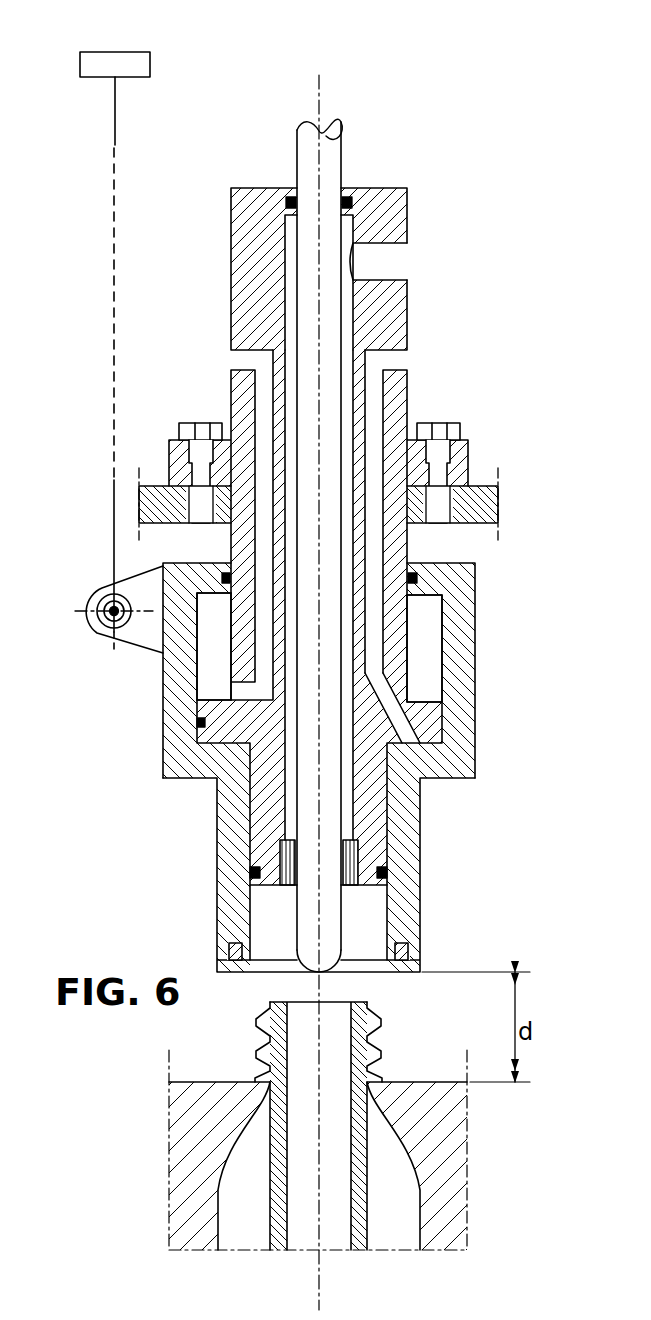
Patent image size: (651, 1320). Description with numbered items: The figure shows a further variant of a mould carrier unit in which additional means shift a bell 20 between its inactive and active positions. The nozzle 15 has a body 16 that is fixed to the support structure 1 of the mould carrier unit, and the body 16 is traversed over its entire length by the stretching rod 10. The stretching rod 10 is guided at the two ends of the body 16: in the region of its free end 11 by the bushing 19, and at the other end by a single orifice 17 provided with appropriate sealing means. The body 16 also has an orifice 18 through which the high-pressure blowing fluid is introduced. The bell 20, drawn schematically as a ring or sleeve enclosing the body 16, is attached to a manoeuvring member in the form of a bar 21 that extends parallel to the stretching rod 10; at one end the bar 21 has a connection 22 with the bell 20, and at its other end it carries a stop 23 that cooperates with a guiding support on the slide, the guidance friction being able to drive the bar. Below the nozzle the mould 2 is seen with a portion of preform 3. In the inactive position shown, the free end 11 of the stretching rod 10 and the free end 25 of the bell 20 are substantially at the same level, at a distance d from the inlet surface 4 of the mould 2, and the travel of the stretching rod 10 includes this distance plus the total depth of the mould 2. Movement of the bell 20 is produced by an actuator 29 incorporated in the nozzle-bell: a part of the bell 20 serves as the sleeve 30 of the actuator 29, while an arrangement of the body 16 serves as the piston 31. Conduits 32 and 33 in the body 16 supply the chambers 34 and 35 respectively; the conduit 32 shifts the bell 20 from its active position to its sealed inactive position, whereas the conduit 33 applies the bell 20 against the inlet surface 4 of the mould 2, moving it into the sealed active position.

The support structure 1 is at (488, 505).
The mould 2 is at (452, 1177).
The preform 3 is at (355, 1238).
The inlet surface 4 is at (200, 1081).
The stretching rod 10 is at (312, 157).
The free end 11 is at (308, 943).
The nozzle 15 is at (228, 186).
The body 16 is at (411, 207).
The orifice 17 is at (350, 197).
The orifice 18 is at (388, 258).
The bushing 19 is at (353, 885).
The bell 20 is at (215, 851).
The bar 21 is at (112, 513).
The connection 22 is at (92, 597).
The stop 23 is at (104, 62).
The free end 25 is at (241, 965).
The actuator 29 is at (480, 645).
The sleeve 30 is at (187, 748).
The piston 31 is at (230, 718).
The conduit 32 is at (229, 360).
The conduit 33 is at (409, 360).
The chamber 34 is at (212, 625).
The chamber 35 is at (418, 742).